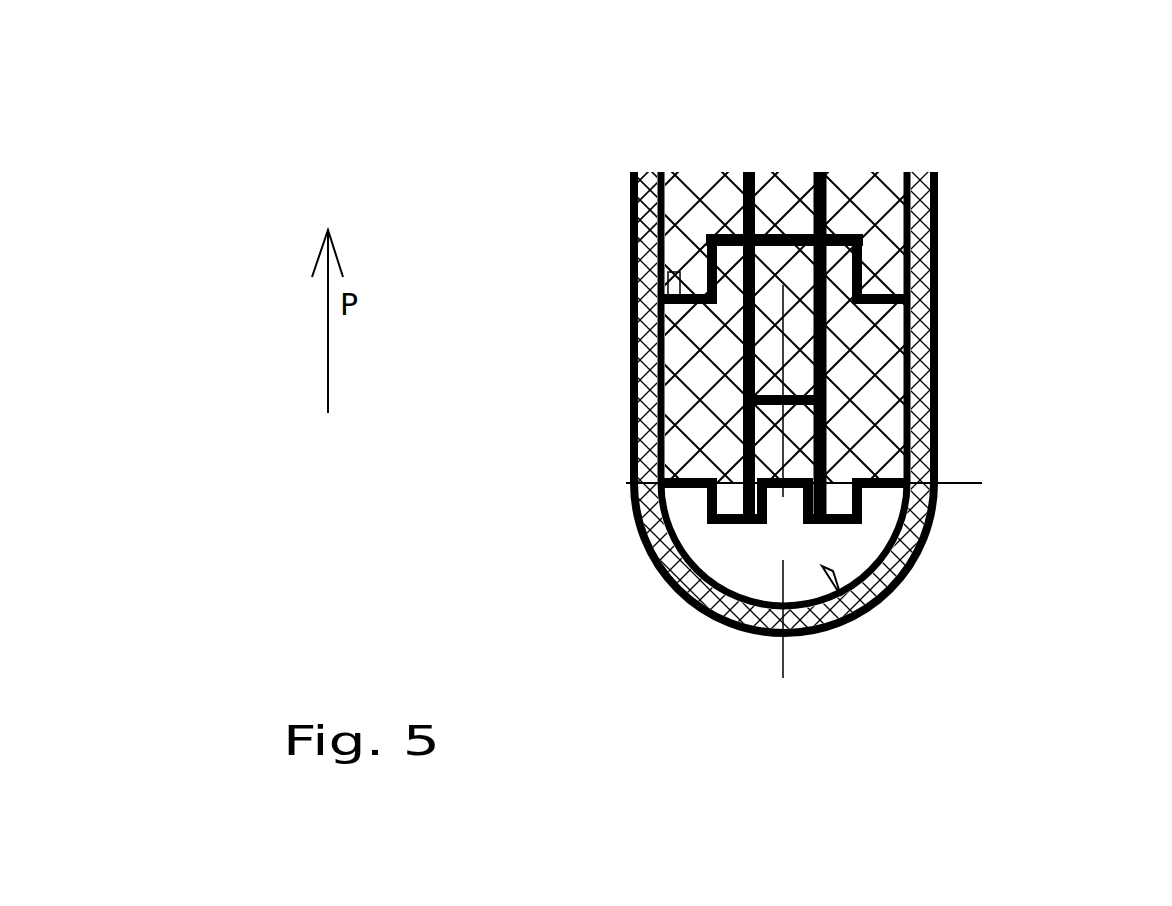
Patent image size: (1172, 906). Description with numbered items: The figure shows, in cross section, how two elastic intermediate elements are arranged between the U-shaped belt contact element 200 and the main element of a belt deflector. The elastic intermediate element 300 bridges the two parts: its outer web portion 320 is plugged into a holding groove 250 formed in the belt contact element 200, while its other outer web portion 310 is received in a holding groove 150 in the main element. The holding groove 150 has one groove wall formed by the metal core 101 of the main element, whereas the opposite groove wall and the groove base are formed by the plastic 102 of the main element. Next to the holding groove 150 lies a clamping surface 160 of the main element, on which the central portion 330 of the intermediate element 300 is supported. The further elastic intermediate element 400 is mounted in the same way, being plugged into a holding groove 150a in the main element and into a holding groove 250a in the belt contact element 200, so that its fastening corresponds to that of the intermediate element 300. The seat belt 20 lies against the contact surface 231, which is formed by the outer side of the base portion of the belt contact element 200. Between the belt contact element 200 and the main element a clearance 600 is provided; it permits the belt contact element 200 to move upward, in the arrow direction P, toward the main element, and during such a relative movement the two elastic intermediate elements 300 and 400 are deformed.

The seat belt 20 is at (903, 583).
The metal core 101 is at (773, 195).
The plastic 102 is at (720, 232).
The holding groove 150 is at (667, 175).
The holding groove 150a is at (838, 260).
The clamping surface 160 is at (675, 273).
The belt contact element 200 is at (800, 642).
The contact surface 231 is at (872, 612).
The holding groove 250 is at (609, 505).
The holding groove 250a is at (862, 507).
The elastic intermediate element 300 is at (710, 363).
The outer web portion 310 is at (706, 262).
The outer web portion 320 is at (728, 508).
The central portion 330 is at (683, 415).
The further elastic intermediate element 400 is at (892, 353).
The clearance 600 is at (909, 437).